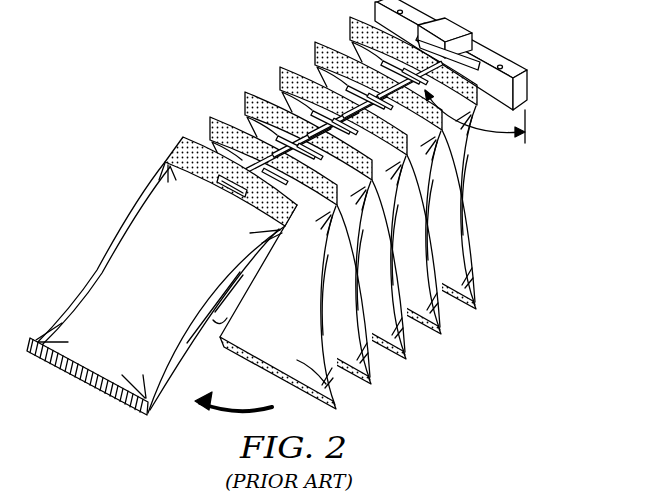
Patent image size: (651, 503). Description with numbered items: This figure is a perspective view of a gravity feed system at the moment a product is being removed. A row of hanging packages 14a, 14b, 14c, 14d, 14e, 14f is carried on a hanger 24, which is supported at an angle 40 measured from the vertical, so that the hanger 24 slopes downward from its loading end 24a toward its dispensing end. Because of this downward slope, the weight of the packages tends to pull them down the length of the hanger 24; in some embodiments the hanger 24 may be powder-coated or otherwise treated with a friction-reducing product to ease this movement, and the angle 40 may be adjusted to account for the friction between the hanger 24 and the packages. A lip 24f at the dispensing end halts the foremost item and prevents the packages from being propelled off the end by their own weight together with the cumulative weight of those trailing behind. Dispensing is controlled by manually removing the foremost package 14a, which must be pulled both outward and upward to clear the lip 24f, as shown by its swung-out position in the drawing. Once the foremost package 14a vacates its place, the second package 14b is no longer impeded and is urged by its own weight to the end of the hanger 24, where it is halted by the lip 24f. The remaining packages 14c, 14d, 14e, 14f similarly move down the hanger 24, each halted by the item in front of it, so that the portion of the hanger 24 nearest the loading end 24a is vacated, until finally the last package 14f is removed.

The foremost package 14a is at (78, 380).
The second package 14b is at (338, 405).
The package 14c is at (375, 378).
The package 14d is at (408, 353).
The package 14e is at (443, 329).
The last package 14f is at (478, 304).
The hanger 24 is at (274, 141).
The loading end 24a is at (490, 53).
The lip 24f is at (226, 188).
The angle 40 is at (508, 145).